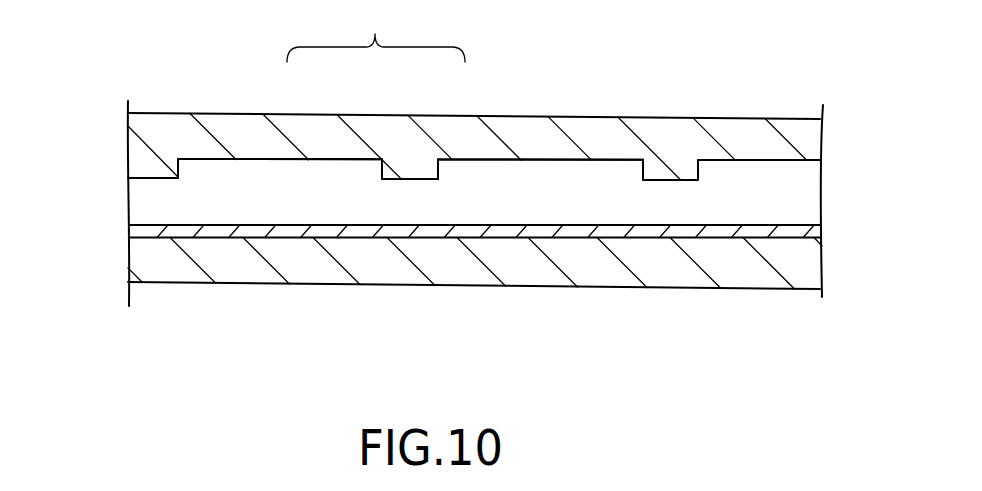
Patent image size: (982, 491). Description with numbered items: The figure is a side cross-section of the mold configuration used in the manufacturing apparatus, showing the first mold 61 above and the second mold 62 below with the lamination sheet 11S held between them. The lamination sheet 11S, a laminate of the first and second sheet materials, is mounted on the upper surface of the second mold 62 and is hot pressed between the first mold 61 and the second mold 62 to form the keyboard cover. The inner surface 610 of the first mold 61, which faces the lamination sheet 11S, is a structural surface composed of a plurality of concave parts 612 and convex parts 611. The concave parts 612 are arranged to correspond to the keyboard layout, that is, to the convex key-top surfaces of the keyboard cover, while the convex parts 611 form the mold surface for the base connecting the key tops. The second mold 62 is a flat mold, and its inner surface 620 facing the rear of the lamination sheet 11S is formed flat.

The first mold 61 is at (130, 130).
The inner surface 610 is at (376, 32).
The convex part 611 is at (397, 180).
The concave part 612 is at (267, 160).
The lamination sheet 11S is at (146, 225).
The inner surface 620 is at (315, 237).
The second mold 62 is at (141, 263).